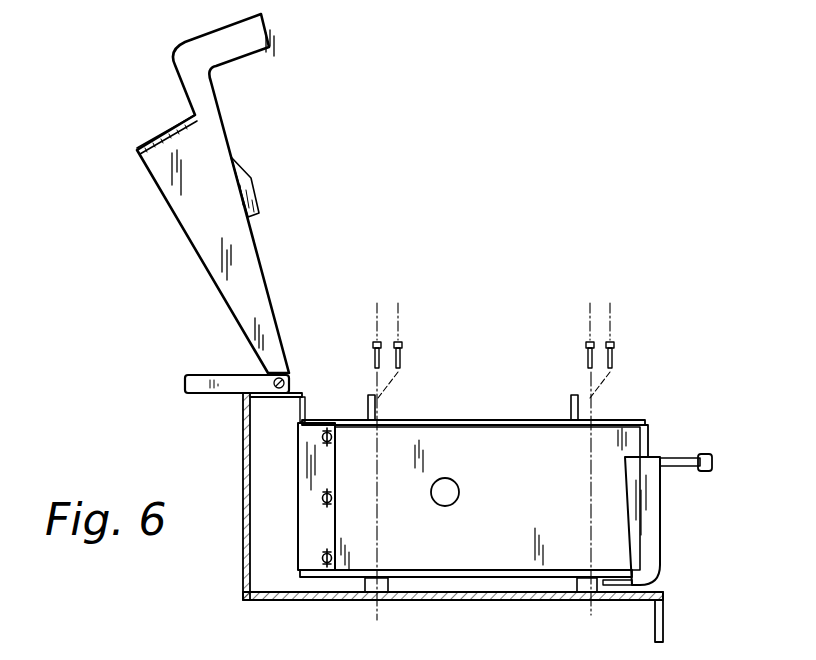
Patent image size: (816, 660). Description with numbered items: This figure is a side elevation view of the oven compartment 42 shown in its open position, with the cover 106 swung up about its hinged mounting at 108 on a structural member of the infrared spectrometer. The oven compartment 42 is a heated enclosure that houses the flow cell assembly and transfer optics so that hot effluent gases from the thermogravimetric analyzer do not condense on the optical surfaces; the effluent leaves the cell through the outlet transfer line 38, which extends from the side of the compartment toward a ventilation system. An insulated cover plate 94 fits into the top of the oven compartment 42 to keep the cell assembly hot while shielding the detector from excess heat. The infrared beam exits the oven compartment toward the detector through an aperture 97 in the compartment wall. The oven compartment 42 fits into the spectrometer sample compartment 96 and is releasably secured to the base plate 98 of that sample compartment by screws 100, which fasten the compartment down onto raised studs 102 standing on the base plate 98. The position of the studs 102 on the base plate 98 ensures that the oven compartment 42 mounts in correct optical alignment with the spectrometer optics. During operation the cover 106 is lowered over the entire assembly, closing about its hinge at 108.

The outlet transfer line 38 is at (685, 467).
The oven compartment 42 is at (540, 460).
The insulated cover plate 94 is at (428, 420).
The spectrometer sample compartment 96 is at (243, 457).
The aperture 97 is at (438, 495).
The base plate 98 is at (280, 598).
The screws 100 is at (583, 347).
The raised studs 102 is at (363, 585).
The cover 106 is at (193, 250).
The hinge mounting 108 is at (279, 383).